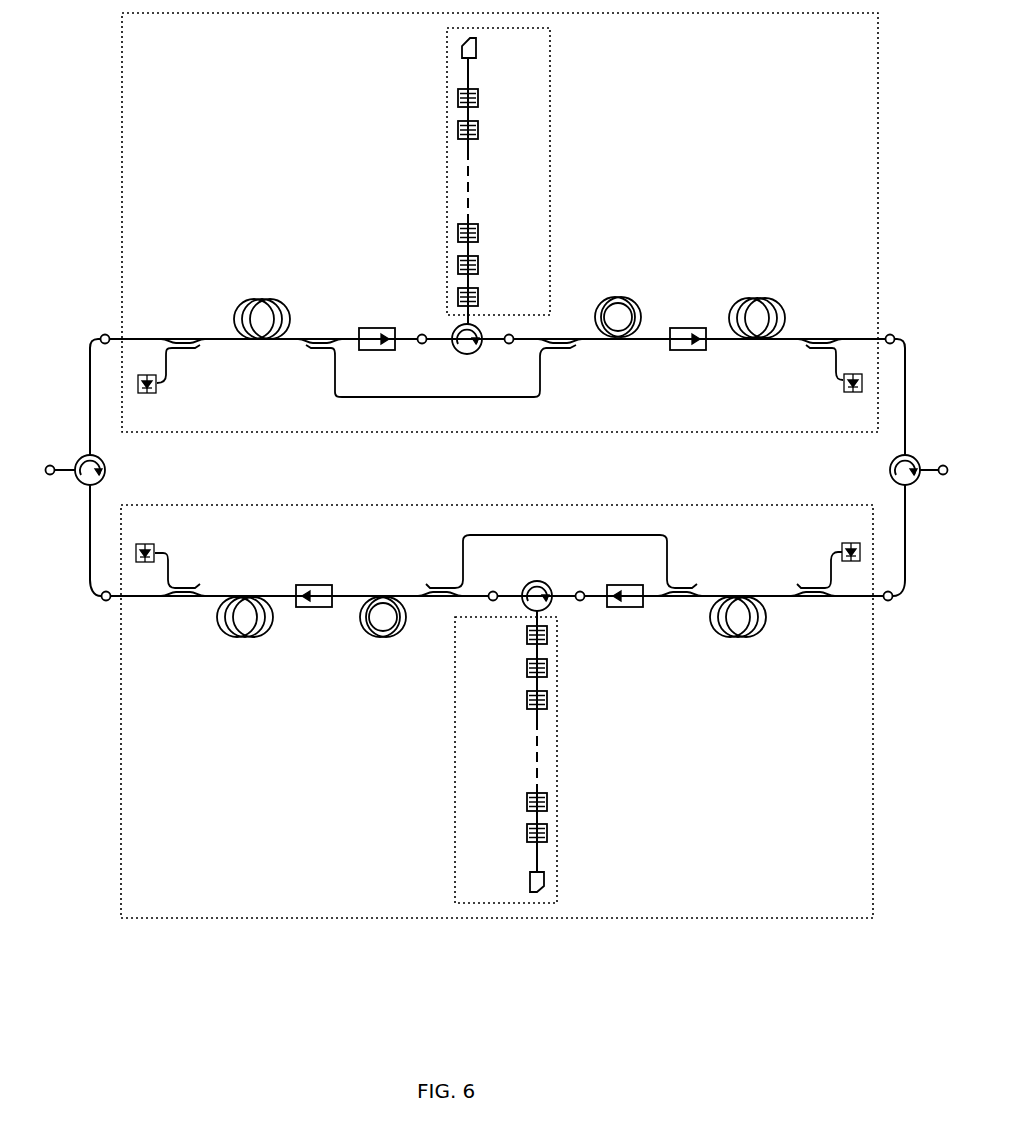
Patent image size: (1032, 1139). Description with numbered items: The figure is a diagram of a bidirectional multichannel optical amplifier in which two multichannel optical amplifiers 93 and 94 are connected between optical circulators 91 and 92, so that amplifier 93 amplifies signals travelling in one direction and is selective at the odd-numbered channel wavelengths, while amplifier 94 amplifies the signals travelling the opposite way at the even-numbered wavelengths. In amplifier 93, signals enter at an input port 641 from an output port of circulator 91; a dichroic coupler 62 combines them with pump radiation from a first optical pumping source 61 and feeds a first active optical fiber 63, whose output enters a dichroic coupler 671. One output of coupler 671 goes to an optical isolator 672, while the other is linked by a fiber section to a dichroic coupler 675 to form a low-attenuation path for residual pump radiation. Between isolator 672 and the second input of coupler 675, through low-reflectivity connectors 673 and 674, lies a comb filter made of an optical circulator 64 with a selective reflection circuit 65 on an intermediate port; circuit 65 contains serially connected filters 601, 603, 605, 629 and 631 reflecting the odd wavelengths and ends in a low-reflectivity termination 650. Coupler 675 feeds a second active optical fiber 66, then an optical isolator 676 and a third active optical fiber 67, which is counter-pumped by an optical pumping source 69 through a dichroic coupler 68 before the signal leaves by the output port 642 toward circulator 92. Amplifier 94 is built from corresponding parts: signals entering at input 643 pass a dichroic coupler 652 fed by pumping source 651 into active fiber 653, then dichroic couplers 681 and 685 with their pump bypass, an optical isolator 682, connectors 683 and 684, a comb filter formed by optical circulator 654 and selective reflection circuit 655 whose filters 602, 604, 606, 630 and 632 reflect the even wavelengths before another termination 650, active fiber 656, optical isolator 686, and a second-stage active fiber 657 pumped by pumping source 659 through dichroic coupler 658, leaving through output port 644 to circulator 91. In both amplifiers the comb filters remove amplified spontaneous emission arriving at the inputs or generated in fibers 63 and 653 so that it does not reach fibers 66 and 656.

The multichannel optical amplifier 93 is at (885, 138).
The multichannel optical amplifier 94 is at (880, 800).
The selective reflection circuit 65 is at (560, 120).
The selective reflection circuit 655 is at (560, 795).
The optical circulator 91 is at (74, 461).
The optical circulator 92 is at (920, 461).
The optical circulator 64 is at (463, 351).
The optical circulator 654 is at (541, 585).
The input port 641 is at (101, 334).
The upper right port 642 is at (895, 332).
The input 643 is at (892, 606).
The lower left port 644 is at (101, 607).
The low-reflectivity connector 673 is at (422, 333).
The low-reflectivity connector 674 is at (509, 345).
The optical connector 683 is at (580, 602).
The optical connector 684 is at (493, 590).
The dichroic coupler 62 is at (183, 332).
The first optical pumping source 61 is at (147, 394).
The dichroic coupler 671 is at (320, 332).
The dichroic coupler 675 is at (562, 352).
The dichroic coupler 68 is at (820, 332).
The optical pumping source 69 is at (853, 394).
The first active optical fiber 63 is at (262, 297).
The optical isolator 672 is at (377, 327).
The second active optical fiber 66 is at (618, 296).
The optical isolator 676 is at (688, 327).
The third active optical fiber 67 is at (757, 297).
The low-reflectivity termination 650 is at (480, 48).
The filter 631 is at (480, 98).
The filter 629 is at (480, 130).
The filter 605 is at (480, 233).
The filter 603 is at (480, 265).
The filter 601 is at (480, 297).
The filter 602 is at (525, 636).
The filter 604 is at (525, 669).
The filter 606 is at (525, 701).
The filter 630 is at (525, 803).
The filter 632 is at (525, 834).
The coupler 658 is at (183, 607).
The pumping source 659 is at (146, 544).
The dichroic coupler 685 is at (443, 585).
The dichroic coupler 681 is at (680, 605).
The dichroic coupler 652 is at (813, 605).
The pumping source 651 is at (851, 543).
The active fiber 657 is at (245, 640).
The optical isolator 686 is at (314, 610).
The active fiber 656 is at (383, 640).
The optical isolator 682 is at (626, 610).
The active fiber 653 is at (738, 640).